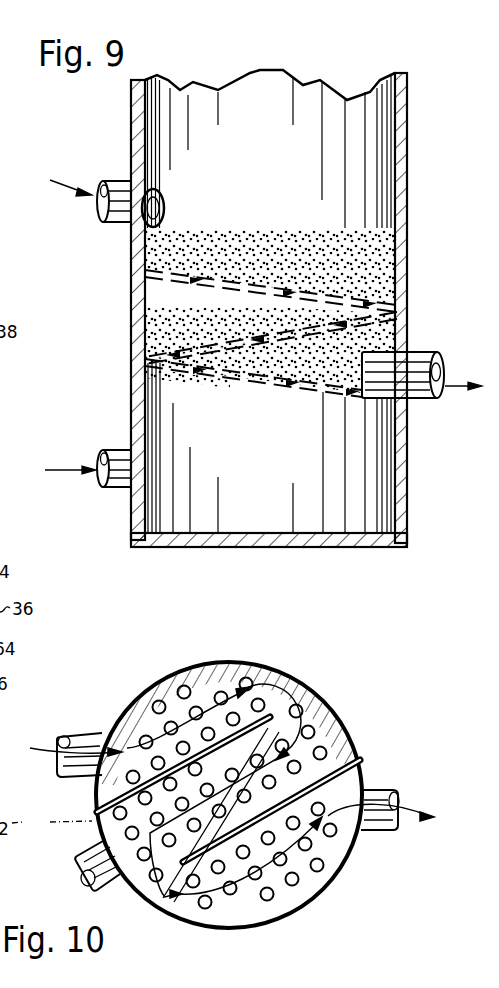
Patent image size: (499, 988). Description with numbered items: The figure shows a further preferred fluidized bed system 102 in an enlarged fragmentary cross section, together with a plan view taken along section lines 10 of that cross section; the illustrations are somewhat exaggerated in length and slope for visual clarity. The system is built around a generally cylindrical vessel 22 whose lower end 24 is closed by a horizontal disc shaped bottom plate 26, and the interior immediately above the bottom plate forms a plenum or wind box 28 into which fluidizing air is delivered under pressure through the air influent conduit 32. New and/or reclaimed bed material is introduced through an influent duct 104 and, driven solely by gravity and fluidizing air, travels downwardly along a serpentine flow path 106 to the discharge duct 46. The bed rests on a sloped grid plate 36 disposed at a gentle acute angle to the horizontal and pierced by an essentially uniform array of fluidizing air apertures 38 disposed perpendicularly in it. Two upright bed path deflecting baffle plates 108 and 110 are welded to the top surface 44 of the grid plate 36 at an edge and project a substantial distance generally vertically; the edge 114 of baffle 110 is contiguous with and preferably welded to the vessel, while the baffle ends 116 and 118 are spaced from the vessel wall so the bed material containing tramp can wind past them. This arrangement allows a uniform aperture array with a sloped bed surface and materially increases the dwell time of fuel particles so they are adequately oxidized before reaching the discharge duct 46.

In FIG. 9, the fluidized bed system 102 is at (430, 80).
In FIG. 10, the fluidized bed system 102 is at (376, 700).
In FIG. 9, the section lines 10— 10 is at (120, 112).
In FIG. 9, the vessel 22 is at (408, 212).
In FIG. 9, the lower end 24 is at (132, 526).
In FIG. 9, the bottom plate 26 is at (338, 548).
In FIG. 9, the plenum or wind box 28 is at (272, 488).
In FIG. 9, the air influent conduit 32 is at (120, 488).
In FIG. 10, the air influent conduit 32 is at (90, 845).
In FIG. 10, the grid plate 36 is at (350, 730).
In FIG. 10, the fluidizing air apertures 38 is at (163, 703).
In FIG. 10, the top surface 44 is at (290, 700).
In FIG. 9, the discharge duct 46 is at (440, 400).
In FIG. 10, the discharge duct 46 is at (376, 832).
In FIG. 9, the influent duct 104 is at (118, 215).
In FIG. 10, the influent duct 104 is at (87, 737).
In FIG. 9, the serpentine flow path 106 is at (250, 288).
In FIG. 10, the serpentine flow path 106 is at (277, 693).
In FIG. 10, the baffle plate 108 is at (92, 796).
In FIG. 10, the baffle plate 110 is at (362, 775).
In FIG. 10, the edge of baffle 114 is at (345, 765).
In FIG. 10, the baffle end 116 is at (332, 700).
In FIG. 10, the baffle end 118 is at (172, 897).